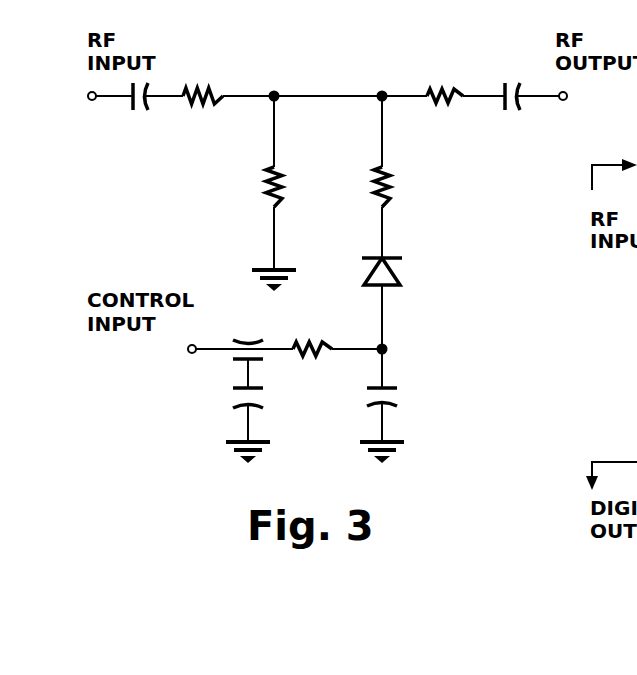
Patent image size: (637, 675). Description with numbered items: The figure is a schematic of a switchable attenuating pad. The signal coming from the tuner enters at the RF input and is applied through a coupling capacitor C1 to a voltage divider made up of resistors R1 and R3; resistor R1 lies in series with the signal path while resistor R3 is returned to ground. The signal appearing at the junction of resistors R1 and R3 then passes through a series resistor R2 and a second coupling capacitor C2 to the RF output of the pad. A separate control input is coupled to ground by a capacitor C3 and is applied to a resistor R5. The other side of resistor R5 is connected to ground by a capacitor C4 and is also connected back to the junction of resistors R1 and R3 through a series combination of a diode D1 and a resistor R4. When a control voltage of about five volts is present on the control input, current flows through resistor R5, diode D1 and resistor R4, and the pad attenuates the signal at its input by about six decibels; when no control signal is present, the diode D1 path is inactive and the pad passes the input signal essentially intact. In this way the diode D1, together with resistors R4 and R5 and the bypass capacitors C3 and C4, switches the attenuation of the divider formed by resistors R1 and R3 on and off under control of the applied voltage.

The capacitor C1 is at (145, 102).
The resistor R1 is at (190, 87).
The resistor R2 is at (433, 87).
The capacitor C2 is at (504, 102).
The resistor R3 is at (270, 176).
The resistor R4 is at (378, 176).
The diode D1 is at (370, 258).
The resistor R5 is at (300, 346).
The capacitor C3 is at (240, 388).
The capacitor C4 is at (370, 388).